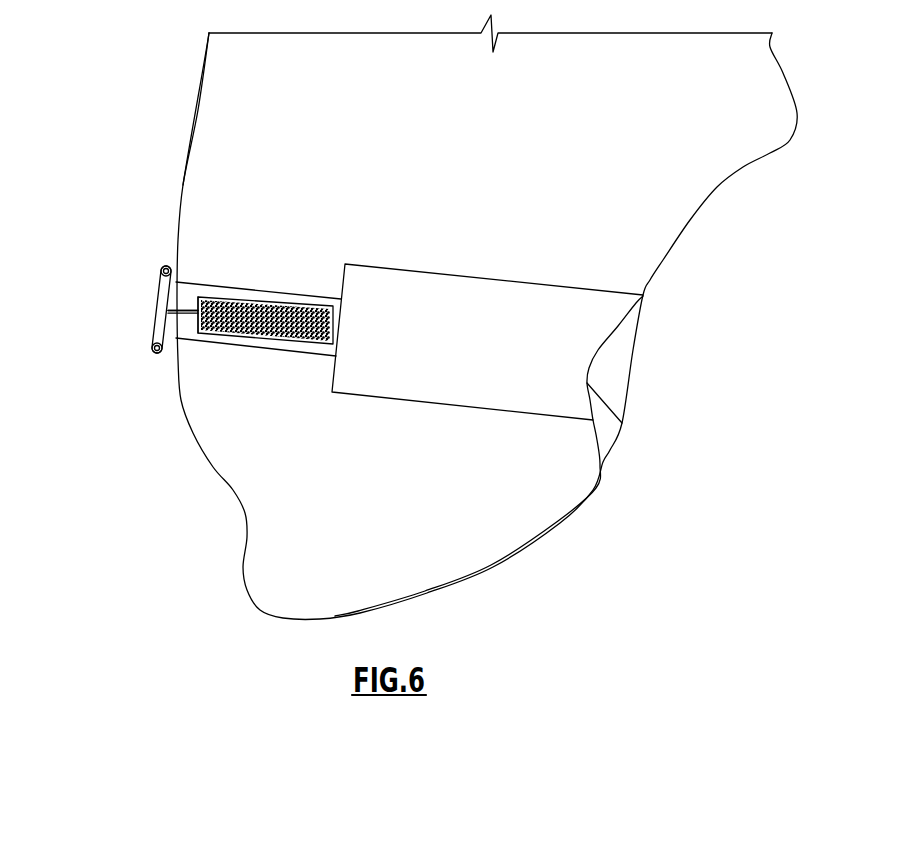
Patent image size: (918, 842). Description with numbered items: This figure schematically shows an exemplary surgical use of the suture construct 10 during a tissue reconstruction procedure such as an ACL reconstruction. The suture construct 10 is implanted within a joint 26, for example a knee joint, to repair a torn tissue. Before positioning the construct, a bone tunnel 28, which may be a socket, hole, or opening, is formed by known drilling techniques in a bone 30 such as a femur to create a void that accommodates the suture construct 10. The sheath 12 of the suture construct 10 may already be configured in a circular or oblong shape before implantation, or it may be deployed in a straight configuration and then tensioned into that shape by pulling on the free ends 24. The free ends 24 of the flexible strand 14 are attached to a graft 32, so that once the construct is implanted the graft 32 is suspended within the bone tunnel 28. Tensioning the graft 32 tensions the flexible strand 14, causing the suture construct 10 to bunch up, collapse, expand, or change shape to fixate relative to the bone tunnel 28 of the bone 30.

The suture construct 10 is at (141, 320).
The sheath 12 is at (162, 273).
The flexible strand 14 is at (190, 297).
The free ends 24 is at (210, 330).
The joint 26 is at (195, 168).
The bone tunnel 28 is at (288, 292).
The bone 30 is at (453, 172).
The graft 32 is at (310, 332).